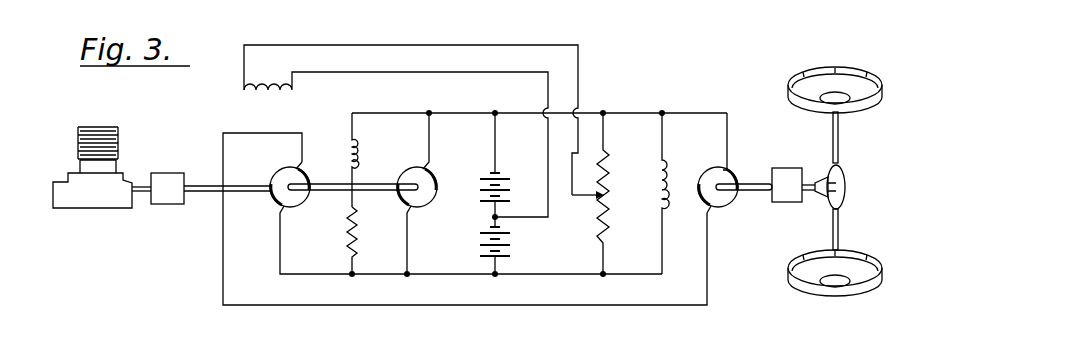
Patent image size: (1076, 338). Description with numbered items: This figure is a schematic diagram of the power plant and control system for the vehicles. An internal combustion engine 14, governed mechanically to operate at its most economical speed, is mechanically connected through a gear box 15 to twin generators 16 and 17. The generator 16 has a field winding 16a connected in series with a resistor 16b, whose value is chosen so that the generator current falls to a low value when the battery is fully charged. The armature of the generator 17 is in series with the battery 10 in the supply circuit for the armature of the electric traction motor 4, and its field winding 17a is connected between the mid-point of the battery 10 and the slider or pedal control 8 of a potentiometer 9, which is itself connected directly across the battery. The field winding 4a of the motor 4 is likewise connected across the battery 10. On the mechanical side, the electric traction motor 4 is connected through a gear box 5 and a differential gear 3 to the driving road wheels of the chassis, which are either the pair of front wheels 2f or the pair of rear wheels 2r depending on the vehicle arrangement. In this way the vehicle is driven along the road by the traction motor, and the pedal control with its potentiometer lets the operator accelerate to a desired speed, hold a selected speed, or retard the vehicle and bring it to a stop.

The internal combustion engine 14 is at (118, 148).
The gear box 15 is at (174, 172).
The generator 17 is at (280, 206).
The field winding 17a is at (253, 90).
The generator 16 is at (410, 200).
The field winding 16a is at (348, 160).
The resistor 16b is at (348, 245).
The battery 10 is at (484, 193).
The slider or pedal control 8 is at (571, 199).
The potentiometer 9 is at (608, 221).
The field winding 4a is at (668, 172).
The electric motor 4 is at (729, 172).
The gear box 5 is at (797, 168).
The differential gear 3 is at (845, 172).
The front wheels 2f is at (880, 88).
The rear wheels 2r is at (914, 185).